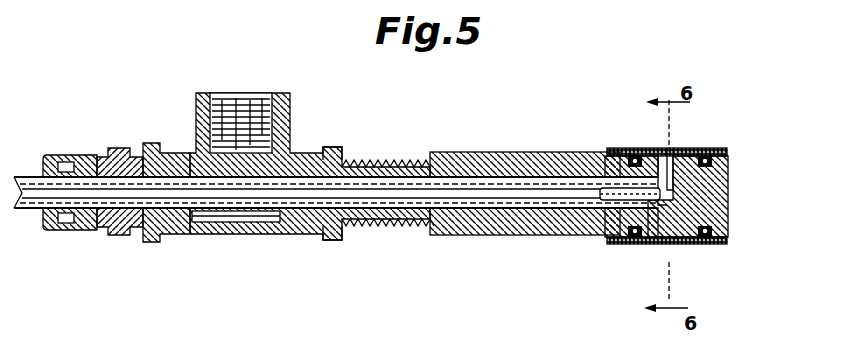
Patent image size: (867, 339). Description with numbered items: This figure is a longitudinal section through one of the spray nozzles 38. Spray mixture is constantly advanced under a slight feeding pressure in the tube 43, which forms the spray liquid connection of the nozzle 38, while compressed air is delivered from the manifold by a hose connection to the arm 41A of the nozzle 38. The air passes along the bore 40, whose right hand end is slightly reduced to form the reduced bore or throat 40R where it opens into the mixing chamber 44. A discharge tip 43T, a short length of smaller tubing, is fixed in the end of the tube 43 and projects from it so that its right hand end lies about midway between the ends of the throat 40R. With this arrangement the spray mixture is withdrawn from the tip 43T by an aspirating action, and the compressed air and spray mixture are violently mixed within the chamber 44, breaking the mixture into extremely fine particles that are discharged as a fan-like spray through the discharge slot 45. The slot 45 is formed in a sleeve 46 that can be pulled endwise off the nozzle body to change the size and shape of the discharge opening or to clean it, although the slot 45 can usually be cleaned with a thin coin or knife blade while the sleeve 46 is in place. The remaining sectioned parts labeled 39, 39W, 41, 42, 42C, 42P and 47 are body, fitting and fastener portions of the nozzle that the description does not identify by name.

The spray nozzle 38 is at (531, 237).
The body 39 is at (440, 153).
The body flange 39W is at (372, 224).
The bore 40 is at (458, 209).
The reduced bore or throat 40R is at (655, 150).
The tee body 41 is at (255, 240).
The arm 41A is at (200, 112).
The fitting flange 42 is at (167, 240).
The coupling nut 42C is at (75, 236).
The cap plug 42P is at (60, 233).
The tube 43 is at (283, 202).
The discharge tip 43T is at (600, 180).
The mixing chamber 44 is at (677, 199).
The discharge slot 45 is at (673, 150).
The sleeve 46 is at (683, 243).
The screws 47 is at (716, 166).